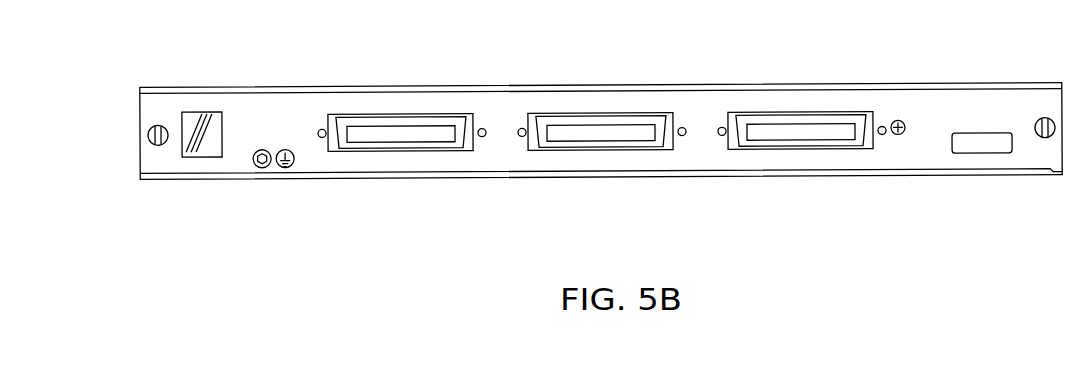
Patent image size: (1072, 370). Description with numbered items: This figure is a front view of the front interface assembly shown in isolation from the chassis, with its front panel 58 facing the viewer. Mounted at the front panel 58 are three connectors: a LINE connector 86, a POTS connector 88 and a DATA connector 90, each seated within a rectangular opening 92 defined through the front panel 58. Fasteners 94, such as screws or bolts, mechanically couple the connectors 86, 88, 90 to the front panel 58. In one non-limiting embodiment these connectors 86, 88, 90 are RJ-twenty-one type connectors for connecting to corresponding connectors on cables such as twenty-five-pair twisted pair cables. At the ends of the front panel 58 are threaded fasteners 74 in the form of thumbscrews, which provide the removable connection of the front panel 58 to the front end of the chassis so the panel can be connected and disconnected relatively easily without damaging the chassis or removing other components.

The front panel 58 is at (903, 155).
The threaded fastener 74 is at (158, 143).
The LINE connector 86 is at (772, 150).
The POTS connector 88 is at (558, 150).
The DATA connector 90 is at (377, 152).
The rectangular opening 92 is at (332, 113).
The fastener 94 is at (486, 128).